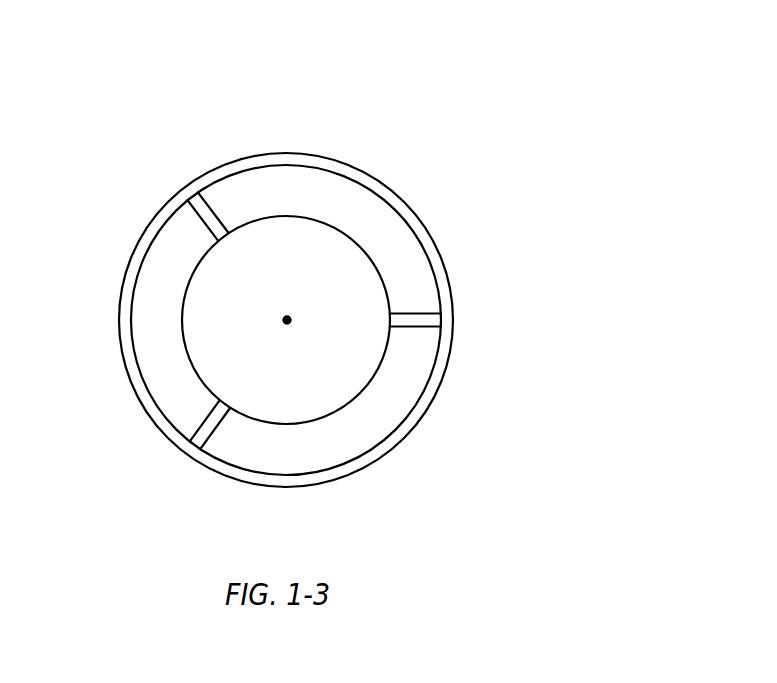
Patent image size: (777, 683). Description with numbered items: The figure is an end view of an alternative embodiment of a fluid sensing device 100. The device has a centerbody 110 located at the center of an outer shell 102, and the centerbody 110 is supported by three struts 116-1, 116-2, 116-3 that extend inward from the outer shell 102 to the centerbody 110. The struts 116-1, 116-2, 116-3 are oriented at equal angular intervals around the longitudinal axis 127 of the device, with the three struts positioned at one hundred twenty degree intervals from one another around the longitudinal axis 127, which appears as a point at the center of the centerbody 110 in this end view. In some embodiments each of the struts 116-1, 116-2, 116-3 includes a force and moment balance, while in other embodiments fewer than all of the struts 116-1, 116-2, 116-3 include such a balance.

The fluid sensing device 100 is at (550, 72).
The outer shell 102 is at (374, 179).
The centerbody 110 is at (357, 398).
The longitudinal axis 127 is at (289, 316).
The strut 116-1 is at (207, 442).
The strut 116-2 is at (191, 209).
The strut 116-3 is at (437, 319).